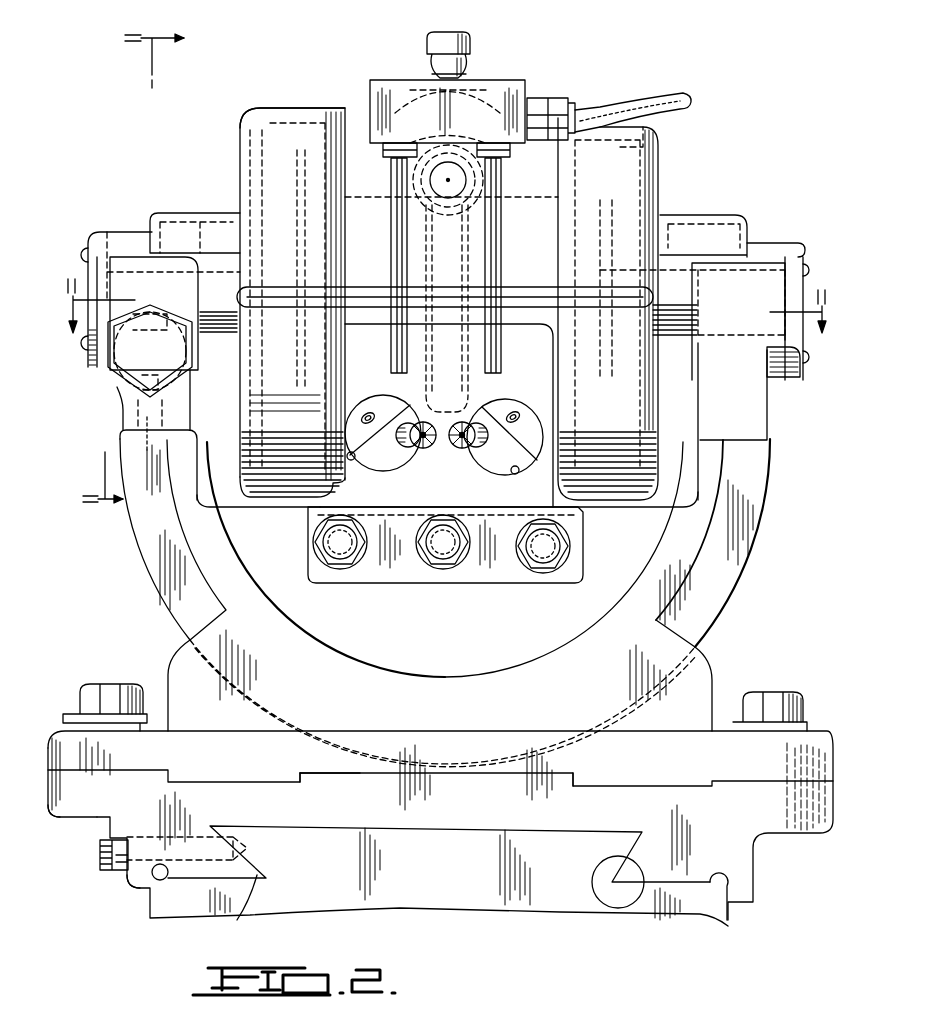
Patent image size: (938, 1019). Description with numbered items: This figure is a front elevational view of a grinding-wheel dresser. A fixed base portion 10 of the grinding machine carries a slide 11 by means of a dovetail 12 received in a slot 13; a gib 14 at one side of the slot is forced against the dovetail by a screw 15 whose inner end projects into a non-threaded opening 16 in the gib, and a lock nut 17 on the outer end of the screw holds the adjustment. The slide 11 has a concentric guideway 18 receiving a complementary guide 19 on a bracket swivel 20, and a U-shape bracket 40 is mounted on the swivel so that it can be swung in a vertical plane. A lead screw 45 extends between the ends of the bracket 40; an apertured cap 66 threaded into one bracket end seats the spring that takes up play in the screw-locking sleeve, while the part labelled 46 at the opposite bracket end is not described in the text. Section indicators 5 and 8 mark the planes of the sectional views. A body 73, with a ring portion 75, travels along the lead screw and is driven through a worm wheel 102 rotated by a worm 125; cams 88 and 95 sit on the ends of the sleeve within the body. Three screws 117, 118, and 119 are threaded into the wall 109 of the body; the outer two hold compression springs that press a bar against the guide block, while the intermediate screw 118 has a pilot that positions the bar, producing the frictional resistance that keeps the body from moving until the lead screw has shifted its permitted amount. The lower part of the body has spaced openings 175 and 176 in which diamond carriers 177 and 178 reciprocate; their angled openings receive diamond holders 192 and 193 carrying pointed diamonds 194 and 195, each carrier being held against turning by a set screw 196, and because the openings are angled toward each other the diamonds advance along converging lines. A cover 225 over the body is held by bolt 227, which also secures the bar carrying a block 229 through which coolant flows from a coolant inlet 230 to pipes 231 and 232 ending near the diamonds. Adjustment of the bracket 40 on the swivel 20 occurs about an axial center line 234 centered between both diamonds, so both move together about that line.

The section line 5- 5 is at (441, 327).
The section line 8- 8 is at (142, 276).
The fixed base portion 10 is at (231, 901).
The slide 11 is at (92, 828).
The dovetail 12 is at (633, 913).
The slot 13 is at (601, 910).
The gib 14 is at (240, 908).
The screw 15 is at (103, 867).
The non-threaded opening 16 is at (224, 826).
The lock nut 17 is at (122, 882).
The concentric guideway 18 is at (308, 773).
The complementary guide 19 is at (573, 780).
The bracket swivel 20 is at (352, 780).
The U-shape bracket 40 is at (690, 588).
The lead screw 45 is at (683, 300).
The left clamp bracket 46 is at (108, 233).
The apertured cap 66 is at (124, 384).
The body 73 is at (252, 432).
The ring portion 75 is at (325, 500).
The cam 88 is at (250, 173).
The cam 95 is at (658, 181).
The worm wheel 102 is at (430, 345).
The wall 109 is at (582, 515).
The screw 117 is at (342, 560).
The intermediate screw 118 is at (447, 565).
The screw 119 is at (557, 558).
The worm 125 is at (482, 172).
The opening 175 is at (352, 462).
The opening 176 is at (515, 467).
The diamond carrier 177 is at (495, 467).
The diamond carrier 178 is at (365, 500).
The diamond holder 192 is at (383, 433).
The diamond holder 193 is at (505, 437).
The pointed diamond 194 is at (420, 449).
The pointed diamond 195 is at (462, 452).
The set screw 196 is at (517, 411).
The cap or cover 225 is at (333, 108).
The bolt 227 is at (471, 44).
The block 229 is at (507, 85).
The coolant inlet 230 is at (667, 101).
The pipe 231 is at (398, 247).
The pipe 232 is at (497, 257).
The axial center line 234 is at (443, 430).